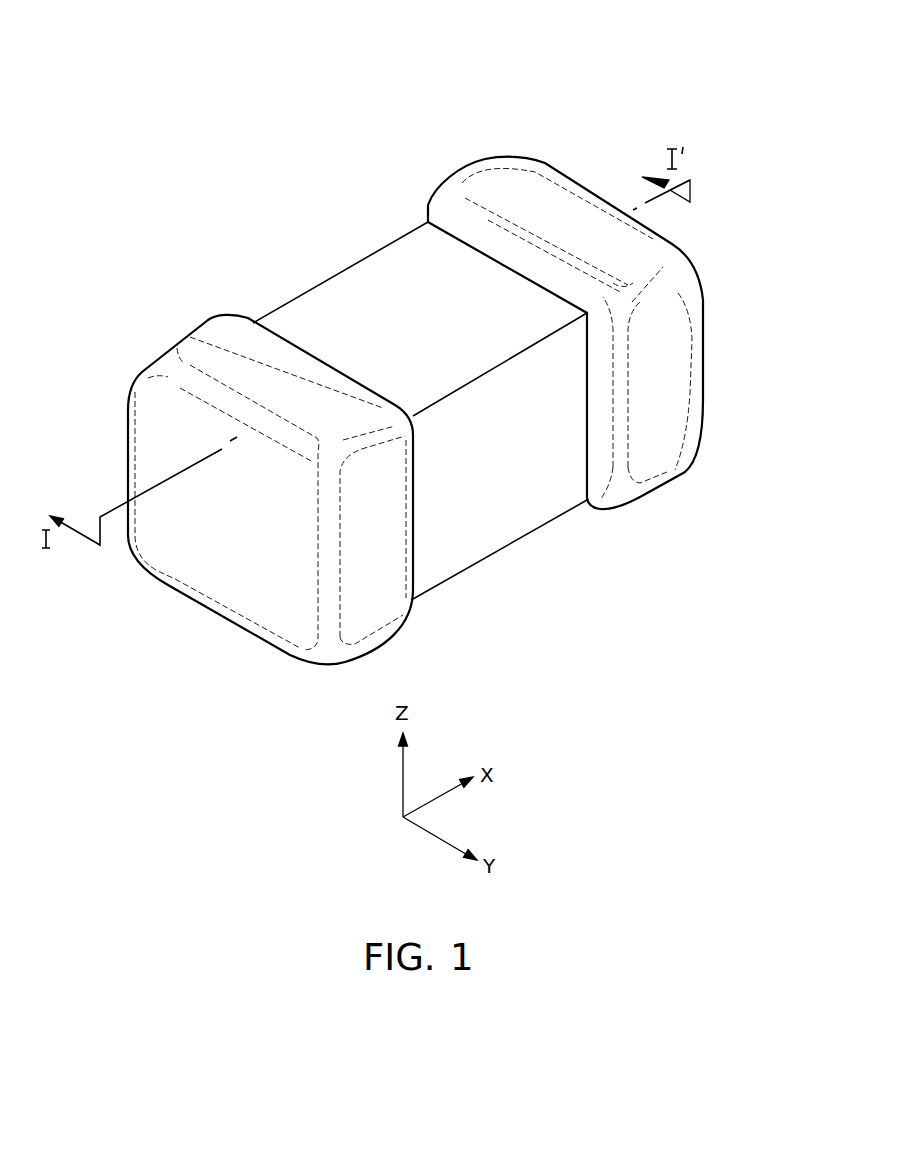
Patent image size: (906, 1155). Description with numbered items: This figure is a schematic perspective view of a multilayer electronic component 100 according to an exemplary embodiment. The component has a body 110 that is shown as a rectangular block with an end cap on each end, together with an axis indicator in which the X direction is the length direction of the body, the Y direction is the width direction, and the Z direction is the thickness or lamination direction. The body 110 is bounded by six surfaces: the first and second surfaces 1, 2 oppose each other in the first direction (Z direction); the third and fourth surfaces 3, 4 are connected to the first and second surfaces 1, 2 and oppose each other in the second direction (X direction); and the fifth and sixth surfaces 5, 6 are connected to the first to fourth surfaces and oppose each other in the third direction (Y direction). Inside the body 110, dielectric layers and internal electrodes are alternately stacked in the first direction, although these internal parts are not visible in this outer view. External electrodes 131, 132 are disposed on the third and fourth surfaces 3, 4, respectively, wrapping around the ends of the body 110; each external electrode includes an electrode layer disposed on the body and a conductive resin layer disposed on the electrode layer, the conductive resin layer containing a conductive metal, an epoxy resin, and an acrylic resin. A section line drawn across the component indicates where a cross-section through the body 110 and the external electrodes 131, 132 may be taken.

The multilayer electronic component 100 is at (277, 56).
The body 110 is at (397, 260).
The external electrode 131 is at (208, 343).
The external electrode 132 is at (487, 182).
The first surface 1 is at (444, 528).
The second surface 2 is at (470, 280).
The third surface 3 is at (231, 546).
The fourth surface 4 is at (659, 327).
The fifth surface 5 is at (512, 489).
The sixth surface 6 is at (350, 330).